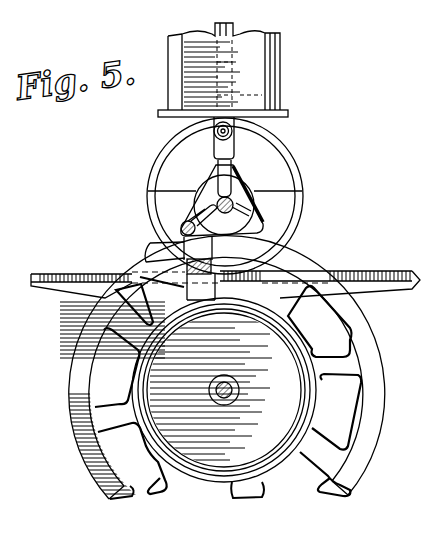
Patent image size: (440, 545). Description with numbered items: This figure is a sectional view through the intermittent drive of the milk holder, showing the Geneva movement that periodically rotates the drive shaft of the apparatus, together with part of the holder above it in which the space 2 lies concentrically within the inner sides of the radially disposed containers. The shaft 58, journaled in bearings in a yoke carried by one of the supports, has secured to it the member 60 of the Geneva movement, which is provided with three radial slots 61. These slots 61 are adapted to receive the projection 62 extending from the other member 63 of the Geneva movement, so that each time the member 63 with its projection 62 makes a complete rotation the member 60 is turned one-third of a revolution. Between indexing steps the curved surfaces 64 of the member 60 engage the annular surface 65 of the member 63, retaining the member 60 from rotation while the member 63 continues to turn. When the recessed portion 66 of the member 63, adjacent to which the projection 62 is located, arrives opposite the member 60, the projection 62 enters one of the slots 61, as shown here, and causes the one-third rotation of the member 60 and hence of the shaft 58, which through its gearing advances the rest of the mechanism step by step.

The space 2 is at (249, 46).
The shaft 58 is at (258, 212).
The member of Geneva movement 60 is at (239, 173).
The radial slots 61 is at (219, 166).
The projection 62 is at (183, 228).
The other member of Geneva movement 63 is at (364, 354).
The curved surfaces 64 is at (195, 211).
The annular surface 65 is at (317, 255).
The recessed portion 66 is at (178, 251).